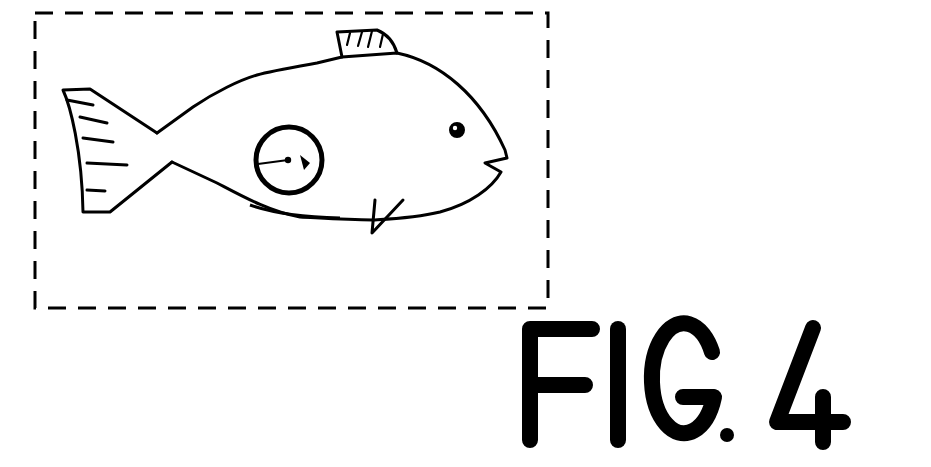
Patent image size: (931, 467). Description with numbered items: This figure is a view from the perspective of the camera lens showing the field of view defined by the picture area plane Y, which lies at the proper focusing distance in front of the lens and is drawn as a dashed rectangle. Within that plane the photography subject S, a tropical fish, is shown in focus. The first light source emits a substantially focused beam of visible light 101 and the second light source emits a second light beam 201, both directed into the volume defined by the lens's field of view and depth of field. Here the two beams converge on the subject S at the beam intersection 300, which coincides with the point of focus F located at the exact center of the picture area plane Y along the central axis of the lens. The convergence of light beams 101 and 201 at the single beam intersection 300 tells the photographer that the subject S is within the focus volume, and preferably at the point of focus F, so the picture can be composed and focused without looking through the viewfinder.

The first light beam 101 is at (306, 128).
The second light beam 201 is at (291, 128).
The beam intersection 300 is at (326, 166).
The point of focus F is at (260, 166).
The photography subject S is at (263, 208).
The picture area plane Y is at (158, 310).